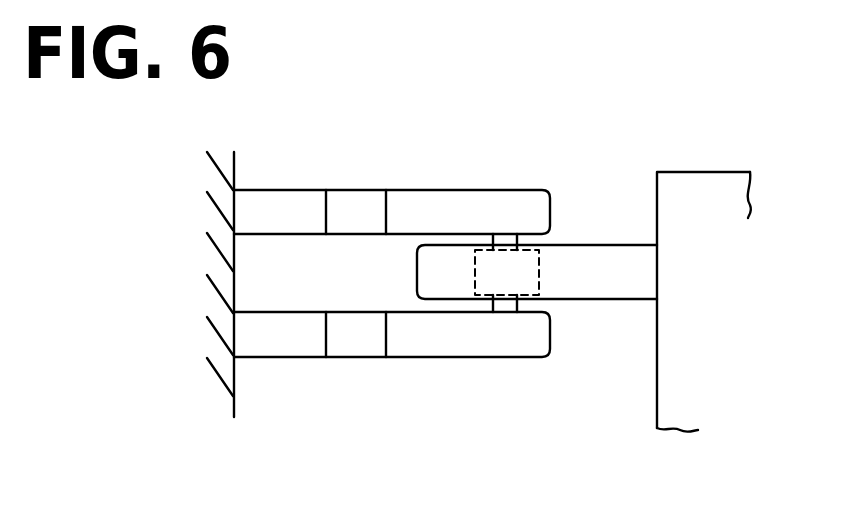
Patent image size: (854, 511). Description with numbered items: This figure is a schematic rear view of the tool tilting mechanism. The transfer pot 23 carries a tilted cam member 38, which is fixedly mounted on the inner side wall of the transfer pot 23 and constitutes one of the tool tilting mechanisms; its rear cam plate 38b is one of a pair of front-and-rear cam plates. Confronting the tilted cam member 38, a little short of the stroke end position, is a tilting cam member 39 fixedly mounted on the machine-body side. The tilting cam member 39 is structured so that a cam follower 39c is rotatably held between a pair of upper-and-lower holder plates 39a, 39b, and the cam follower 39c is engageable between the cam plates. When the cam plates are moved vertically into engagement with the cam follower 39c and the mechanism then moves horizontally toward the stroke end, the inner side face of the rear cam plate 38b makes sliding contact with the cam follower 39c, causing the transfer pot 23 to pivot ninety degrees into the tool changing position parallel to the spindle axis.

The transfer pot 23 is at (704, 166).
The tilted cam member 38 is at (611, 242).
The rear cam plate 38b is at (620, 288).
The tilting cam member 39 is at (317, 420).
The upper holder plate 39a is at (355, 235).
The lower holder plate 39b is at (402, 358).
The cam follower 39c is at (474, 270).